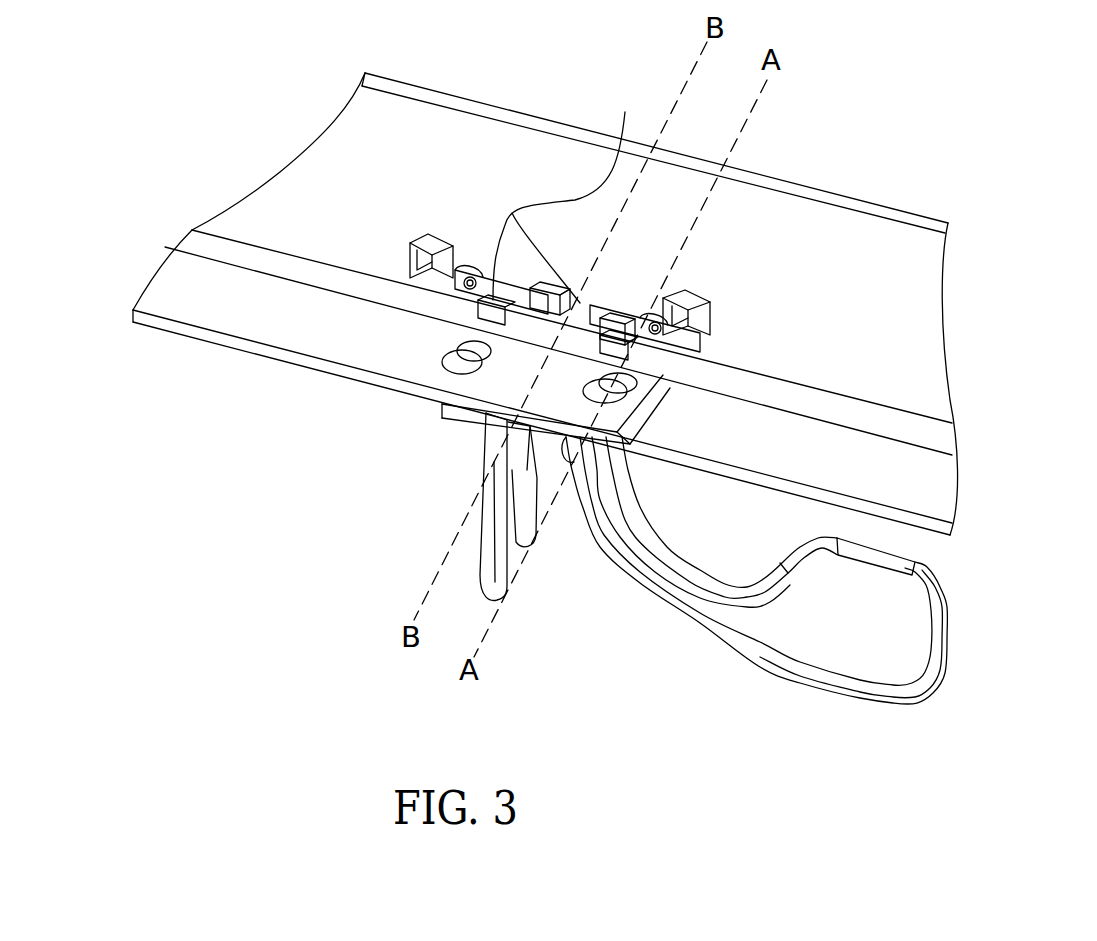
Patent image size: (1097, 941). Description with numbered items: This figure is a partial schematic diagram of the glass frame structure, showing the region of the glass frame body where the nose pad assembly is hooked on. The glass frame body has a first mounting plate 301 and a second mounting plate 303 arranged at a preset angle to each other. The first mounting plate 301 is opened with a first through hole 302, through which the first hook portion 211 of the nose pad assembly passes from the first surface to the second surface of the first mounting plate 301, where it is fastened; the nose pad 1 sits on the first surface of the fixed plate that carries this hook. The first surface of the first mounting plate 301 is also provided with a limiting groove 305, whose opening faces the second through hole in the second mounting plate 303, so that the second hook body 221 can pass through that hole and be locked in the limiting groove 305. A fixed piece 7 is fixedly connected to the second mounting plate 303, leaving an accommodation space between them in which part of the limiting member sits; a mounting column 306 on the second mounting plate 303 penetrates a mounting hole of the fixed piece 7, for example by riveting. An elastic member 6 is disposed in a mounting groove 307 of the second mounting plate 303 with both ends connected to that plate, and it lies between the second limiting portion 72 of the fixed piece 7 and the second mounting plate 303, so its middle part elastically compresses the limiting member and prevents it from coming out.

The nose pad 1 is at (487, 540).
The elastic member 6 is at (618, 302).
The fixed piece 7 is at (545, 320).
The second limiting portion 72 is at (570, 290).
The first hook portion 211 is at (540, 405).
The second hook body 221 is at (573, 194).
The first mounting plate 301 is at (180, 288).
The first through hole 302 is at (455, 347).
The second mounting plate 303 is at (323, 160).
The limiting groove 305 is at (460, 297).
The mounting column 306 is at (470, 277).
The mounting groove 307 is at (414, 232).